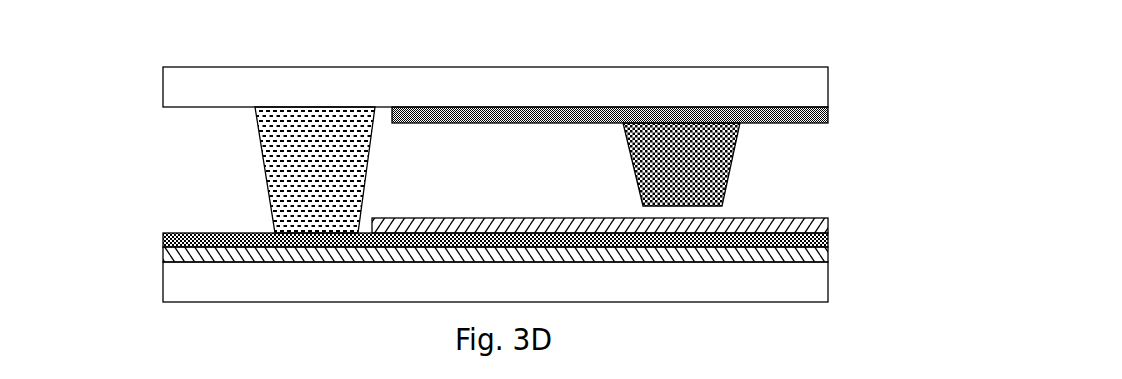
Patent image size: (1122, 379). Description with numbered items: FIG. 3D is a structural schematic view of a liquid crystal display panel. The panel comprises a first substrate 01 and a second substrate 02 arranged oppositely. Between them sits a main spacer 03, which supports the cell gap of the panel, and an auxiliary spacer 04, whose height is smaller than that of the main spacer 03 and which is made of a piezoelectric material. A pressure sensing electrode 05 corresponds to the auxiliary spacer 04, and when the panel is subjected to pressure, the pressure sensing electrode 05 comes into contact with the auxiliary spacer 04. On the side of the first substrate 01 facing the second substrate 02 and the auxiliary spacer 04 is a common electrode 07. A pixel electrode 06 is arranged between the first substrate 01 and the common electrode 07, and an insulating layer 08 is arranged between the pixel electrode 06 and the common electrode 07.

The first substrate 01 is at (797, 279).
The second substrate 02 is at (793, 79).
The main spacer 03 is at (266, 164).
The auxiliary spacer 04 is at (690, 178).
The pressure sensing electrode 05 is at (800, 115).
The pixel electrode 06 is at (825, 255).
The common electrode 07 is at (820, 227).
The insulating layer 08 is at (825, 241).